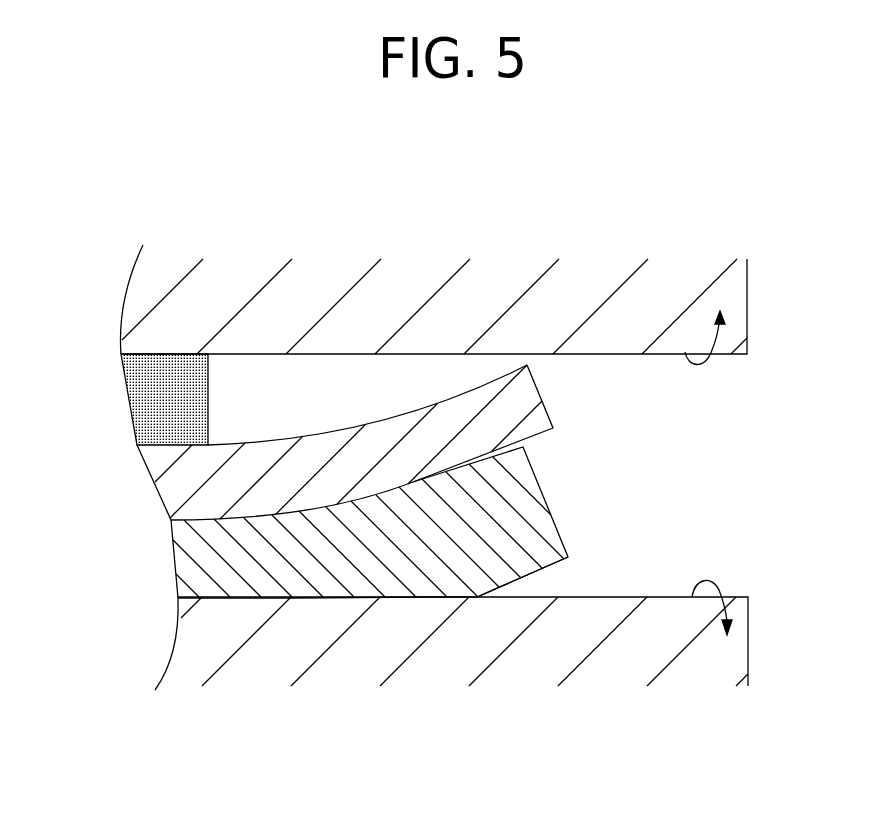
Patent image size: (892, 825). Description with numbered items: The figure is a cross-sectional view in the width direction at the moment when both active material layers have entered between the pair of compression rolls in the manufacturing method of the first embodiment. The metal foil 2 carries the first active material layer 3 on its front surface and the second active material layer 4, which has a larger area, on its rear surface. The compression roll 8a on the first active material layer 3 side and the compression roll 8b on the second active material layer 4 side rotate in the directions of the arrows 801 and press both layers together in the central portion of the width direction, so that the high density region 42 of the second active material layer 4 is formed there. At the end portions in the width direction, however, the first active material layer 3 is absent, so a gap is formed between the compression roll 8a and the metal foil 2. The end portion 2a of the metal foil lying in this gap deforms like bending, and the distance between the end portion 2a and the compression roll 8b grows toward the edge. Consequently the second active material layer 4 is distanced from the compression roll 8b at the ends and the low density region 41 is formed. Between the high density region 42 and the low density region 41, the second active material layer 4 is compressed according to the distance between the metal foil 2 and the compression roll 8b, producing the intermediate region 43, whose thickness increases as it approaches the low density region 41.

The metal foil 2 is at (311, 344).
The end portion of the metal foil 2a is at (432, 437).
The first active material layer 3 is at (163, 403).
The second active material layer 4 is at (535, 518).
The low density region 41 is at (503, 580).
The high density region 42 is at (212, 583).
The intermediate region 43 is at (363, 582).
The compression roll 8a is at (662, 298).
The compression roll 8b is at (638, 648).
The arrows 801 is at (716, 343).